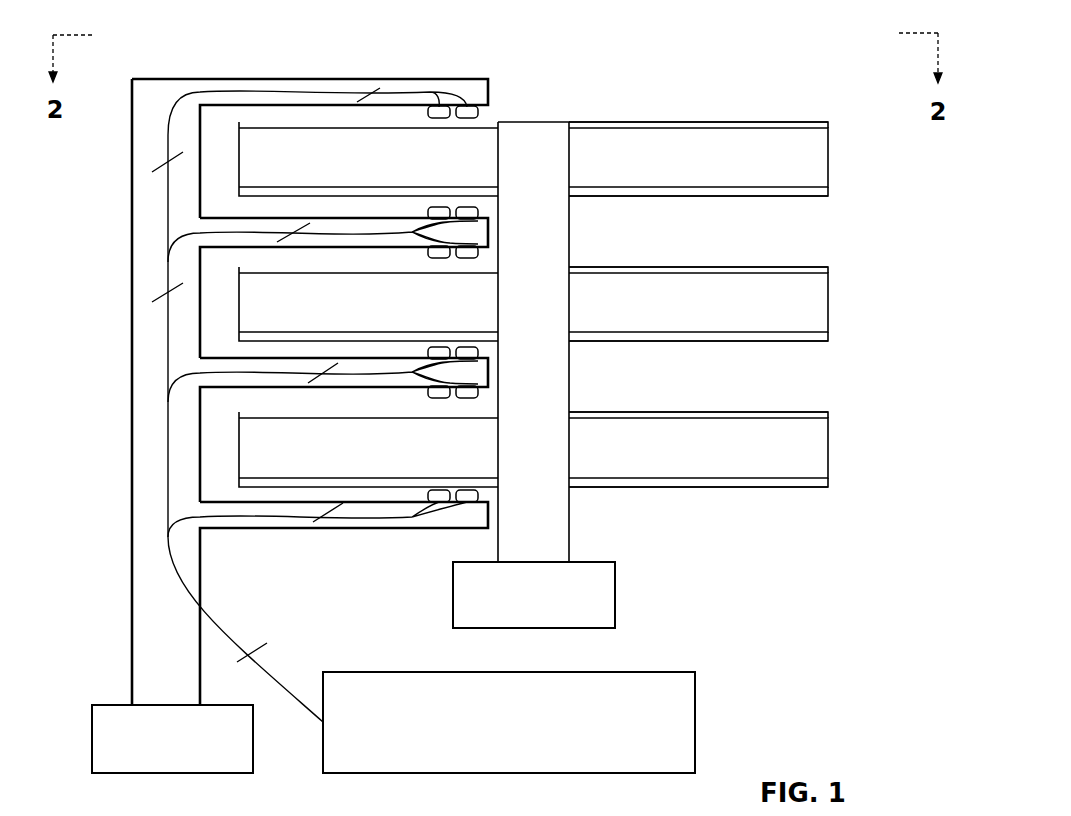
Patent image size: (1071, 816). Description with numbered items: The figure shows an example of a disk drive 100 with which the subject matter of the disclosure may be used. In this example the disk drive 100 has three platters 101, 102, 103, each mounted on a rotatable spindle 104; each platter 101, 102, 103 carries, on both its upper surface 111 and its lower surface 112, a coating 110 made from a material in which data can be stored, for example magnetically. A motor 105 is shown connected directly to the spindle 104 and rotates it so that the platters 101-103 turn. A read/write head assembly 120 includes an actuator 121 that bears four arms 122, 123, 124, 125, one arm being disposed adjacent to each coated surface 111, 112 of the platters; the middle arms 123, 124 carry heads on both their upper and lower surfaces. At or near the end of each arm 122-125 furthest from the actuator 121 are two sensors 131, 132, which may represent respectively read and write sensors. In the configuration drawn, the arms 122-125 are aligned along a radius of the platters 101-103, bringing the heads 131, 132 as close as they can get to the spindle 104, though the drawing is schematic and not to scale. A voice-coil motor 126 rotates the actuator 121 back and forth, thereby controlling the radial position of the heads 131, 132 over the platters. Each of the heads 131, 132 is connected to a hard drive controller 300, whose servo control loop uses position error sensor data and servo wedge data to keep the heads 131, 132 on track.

The disk drive 100 is at (174, 36).
The platter 101 is at (830, 152).
The platter 102 is at (830, 297).
The platter 103 is at (830, 442).
The spindle 104 is at (543, 130).
The motor 105 is at (616, 594).
The coating 110 is at (830, 124).
The upper surface 111 is at (648, 121).
The lower surface 112 is at (648, 197).
The read/write head assembly 120 is at (117, 208).
The actuator 121 is at (130, 313).
The arm 122 is at (311, 79).
The arm 123 is at (327, 217).
The arm 124 is at (327, 357).
The arm 125 is at (324, 500).
The voice-coil motor 126 is at (127, 705).
The sensor 131 is at (468, 118).
The sensor 132 is at (438, 118).
The hard drive controller 300 is at (395, 672).